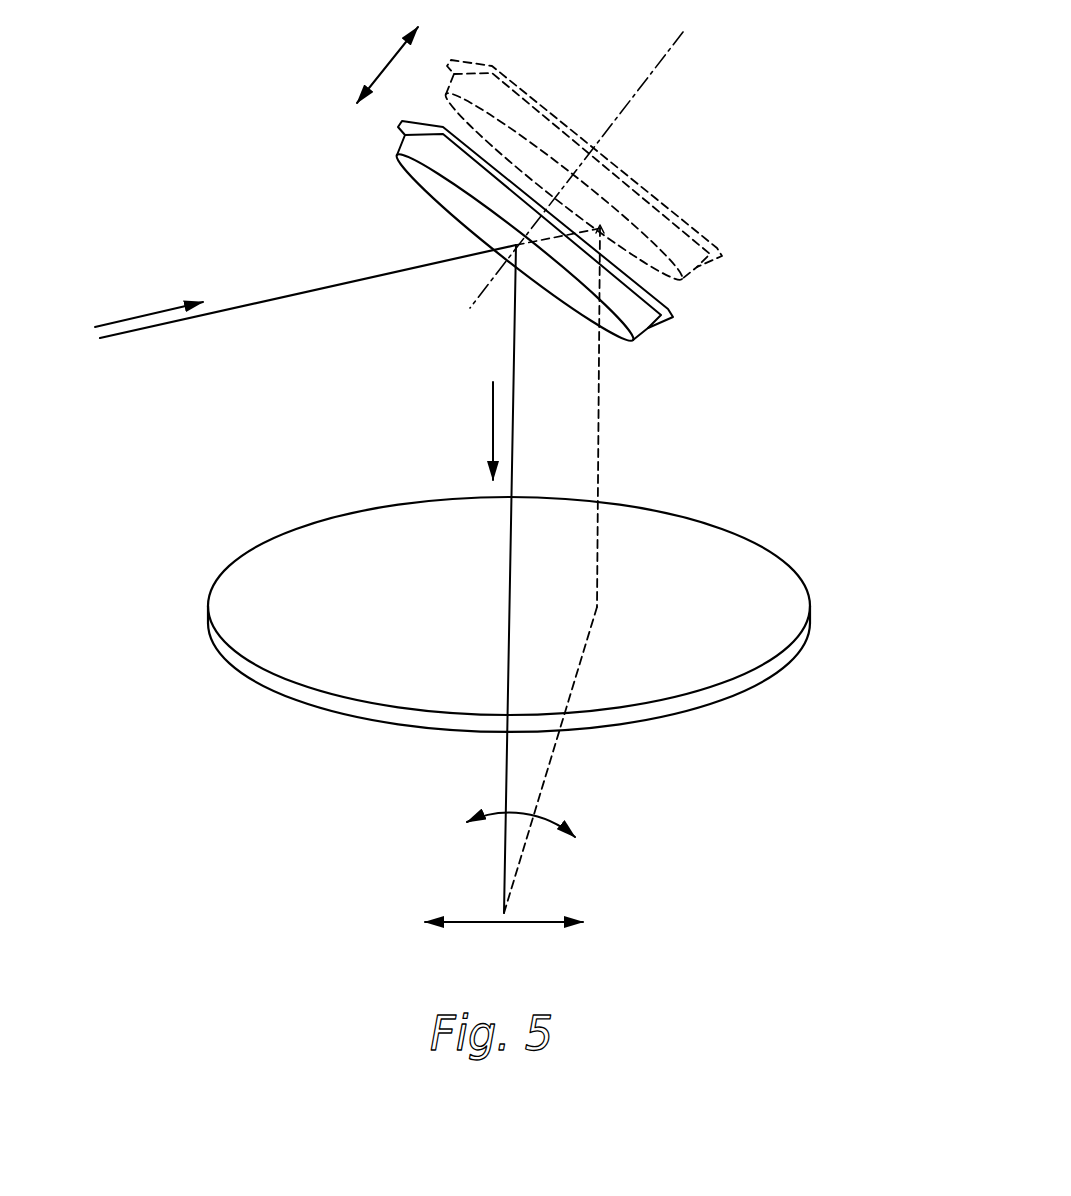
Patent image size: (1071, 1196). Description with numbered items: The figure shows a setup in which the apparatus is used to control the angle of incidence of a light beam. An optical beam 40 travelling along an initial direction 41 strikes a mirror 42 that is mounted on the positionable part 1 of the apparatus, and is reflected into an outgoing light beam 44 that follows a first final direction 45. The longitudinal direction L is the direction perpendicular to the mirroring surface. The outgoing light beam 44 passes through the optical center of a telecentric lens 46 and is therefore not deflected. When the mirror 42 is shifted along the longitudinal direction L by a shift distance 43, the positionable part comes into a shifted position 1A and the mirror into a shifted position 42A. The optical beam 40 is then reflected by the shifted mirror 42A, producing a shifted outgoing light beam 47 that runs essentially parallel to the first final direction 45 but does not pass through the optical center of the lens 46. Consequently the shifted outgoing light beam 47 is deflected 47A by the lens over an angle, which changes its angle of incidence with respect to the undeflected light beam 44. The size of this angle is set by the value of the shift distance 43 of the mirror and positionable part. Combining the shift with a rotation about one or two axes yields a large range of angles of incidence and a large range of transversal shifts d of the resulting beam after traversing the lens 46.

The positionable part 1 is at (673, 313).
The shifted position of positionable part 1A is at (713, 247).
The optical beam 40 is at (243, 308).
The initial direction 41 is at (142, 316).
The mirror 42 is at (645, 327).
The shifted position of mirror 42A is at (693, 267).
The shift distance 43 is at (388, 63).
The outgoing light beam 44 is at (515, 347).
The first final direction 45 is at (490, 420).
The telecentric lens 46 is at (208, 625).
The shifted outgoing light beam 47 is at (602, 395).
The deflected light beam 47A is at (552, 763).
The longitudinal direction L is at (670, 53).
The transversal shift d is at (504, 922).